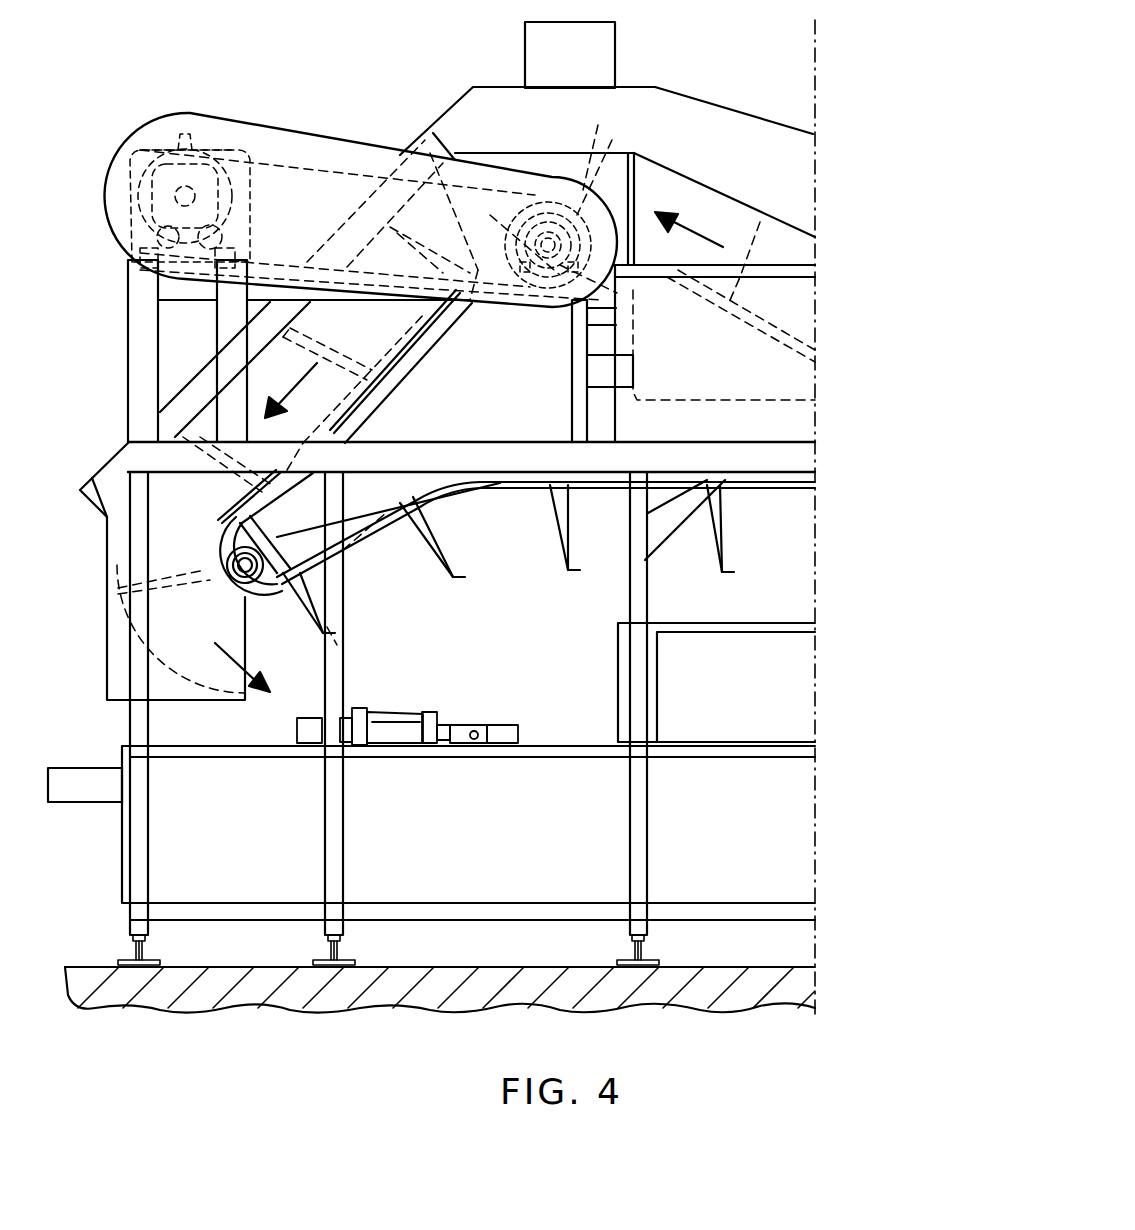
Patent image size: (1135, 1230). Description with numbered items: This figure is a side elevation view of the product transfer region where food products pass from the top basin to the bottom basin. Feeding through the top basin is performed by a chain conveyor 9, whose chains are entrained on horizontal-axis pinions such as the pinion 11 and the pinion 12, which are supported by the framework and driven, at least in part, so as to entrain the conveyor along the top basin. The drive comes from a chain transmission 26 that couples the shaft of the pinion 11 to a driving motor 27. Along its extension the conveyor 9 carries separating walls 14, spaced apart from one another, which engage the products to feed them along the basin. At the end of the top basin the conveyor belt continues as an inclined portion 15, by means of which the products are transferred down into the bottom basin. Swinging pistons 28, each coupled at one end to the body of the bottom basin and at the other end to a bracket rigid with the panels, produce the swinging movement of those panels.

The chain conveyor 9 is at (387, 356).
The pinion 11 is at (538, 225).
The pinion 12 is at (245, 570).
The separating walls 14 is at (420, 547).
The inclined portion 15 is at (450, 347).
The chain transmission 26 is at (315, 128).
The driving motor 27 is at (160, 138).
The swinging pistons 28 is at (387, 730).